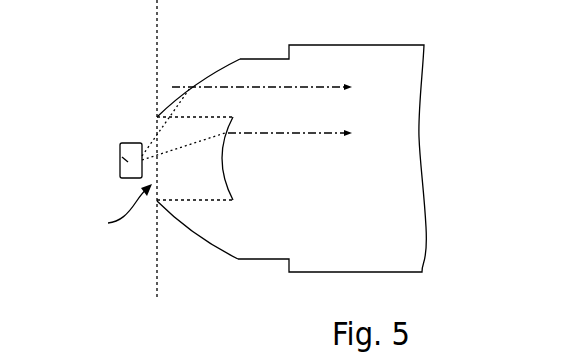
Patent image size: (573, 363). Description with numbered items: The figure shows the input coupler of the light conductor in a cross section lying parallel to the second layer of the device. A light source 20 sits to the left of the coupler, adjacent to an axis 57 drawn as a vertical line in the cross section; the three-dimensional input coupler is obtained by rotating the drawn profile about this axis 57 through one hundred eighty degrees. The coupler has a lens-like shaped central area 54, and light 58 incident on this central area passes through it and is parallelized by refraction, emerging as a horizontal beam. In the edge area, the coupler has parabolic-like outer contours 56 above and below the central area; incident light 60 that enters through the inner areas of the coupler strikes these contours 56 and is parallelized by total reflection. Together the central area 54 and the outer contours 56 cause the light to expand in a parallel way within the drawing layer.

The light source 20 is at (121, 157).
The lens-like shaped central area 54 is at (115, 210).
The parabolic-like outer contours 56 is at (193, 83).
The axis 57 is at (155, 20).
The light incident on the central area 58 is at (198, 143).
The incident light entering through the inner areas 60 is at (179, 104).